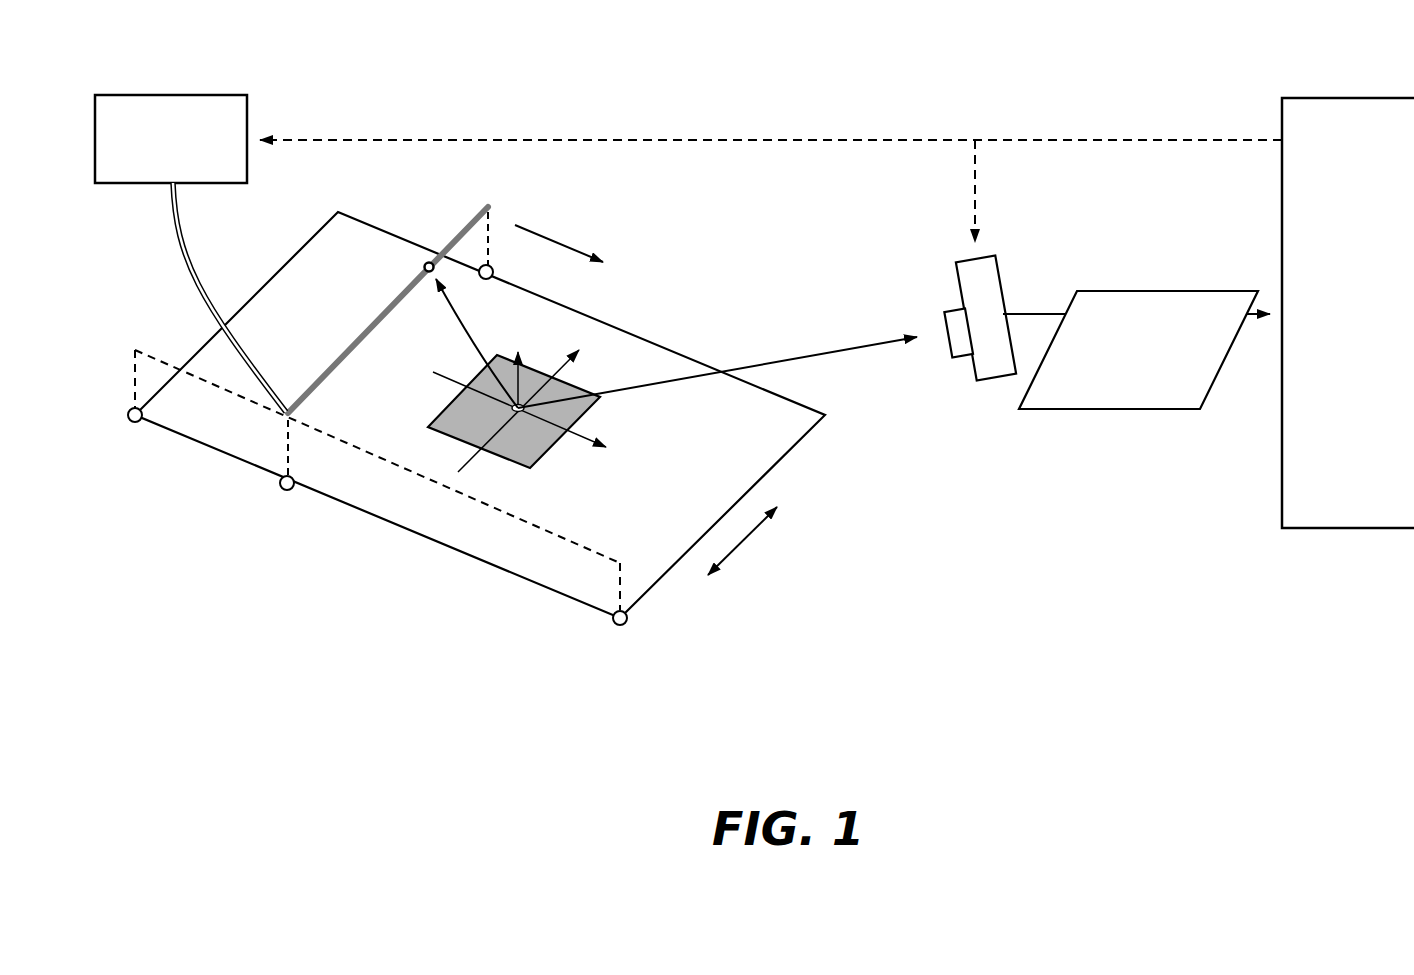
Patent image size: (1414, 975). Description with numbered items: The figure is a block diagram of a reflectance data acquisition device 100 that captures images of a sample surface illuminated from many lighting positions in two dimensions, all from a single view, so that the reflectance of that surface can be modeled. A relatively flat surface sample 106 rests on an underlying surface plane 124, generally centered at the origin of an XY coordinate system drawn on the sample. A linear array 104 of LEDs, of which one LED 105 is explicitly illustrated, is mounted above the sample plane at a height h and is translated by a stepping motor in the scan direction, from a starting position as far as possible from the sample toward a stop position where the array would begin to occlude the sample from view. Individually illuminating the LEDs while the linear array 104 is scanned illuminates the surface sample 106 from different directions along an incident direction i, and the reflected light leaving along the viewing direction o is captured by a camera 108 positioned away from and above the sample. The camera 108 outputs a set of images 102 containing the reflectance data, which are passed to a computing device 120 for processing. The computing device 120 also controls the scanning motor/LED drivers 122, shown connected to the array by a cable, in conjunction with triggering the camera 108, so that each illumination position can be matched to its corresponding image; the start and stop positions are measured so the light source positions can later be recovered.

The reflectance data acquisition device 100 is at (1034, 588).
The images 102 is at (1078, 410).
The linear array of LEDs 104 is at (474, 211).
The LED 105 is at (428, 261).
The surface sample 106 is at (466, 432).
The camera 108 is at (985, 278).
The computing device 120 is at (1343, 120).
The scanning motor/LED drivers 122 is at (153, 107).
The surface plane 124 is at (280, 297).